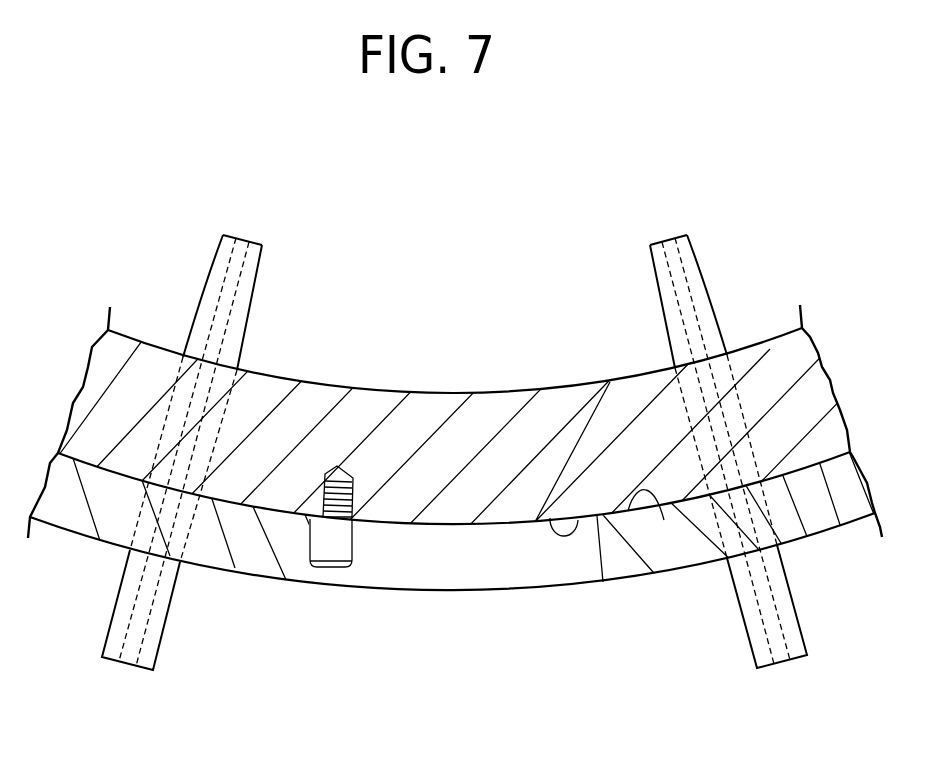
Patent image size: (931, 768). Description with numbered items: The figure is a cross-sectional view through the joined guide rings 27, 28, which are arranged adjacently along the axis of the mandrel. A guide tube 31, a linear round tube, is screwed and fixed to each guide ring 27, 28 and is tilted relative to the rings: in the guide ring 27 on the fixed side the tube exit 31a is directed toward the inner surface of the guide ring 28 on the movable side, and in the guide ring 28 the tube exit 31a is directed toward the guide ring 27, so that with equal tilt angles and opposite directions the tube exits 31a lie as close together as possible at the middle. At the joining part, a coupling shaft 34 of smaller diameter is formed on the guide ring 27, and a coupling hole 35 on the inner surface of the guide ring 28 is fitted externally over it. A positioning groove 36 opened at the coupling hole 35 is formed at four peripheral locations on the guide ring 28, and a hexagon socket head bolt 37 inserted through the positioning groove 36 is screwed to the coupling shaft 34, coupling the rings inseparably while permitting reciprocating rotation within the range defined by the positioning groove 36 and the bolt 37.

The guide ring 27 is at (435, 402).
The guide ring 28 is at (625, 582).
The guide tube 31 is at (123, 575).
The tube exit 31a is at (242, 237).
The coupling shaft 34 is at (550, 518).
The coupling hole 35 is at (664, 520).
The positioning groove 36 is at (465, 560).
The hexagon socket head bolt 37 is at (333, 552).